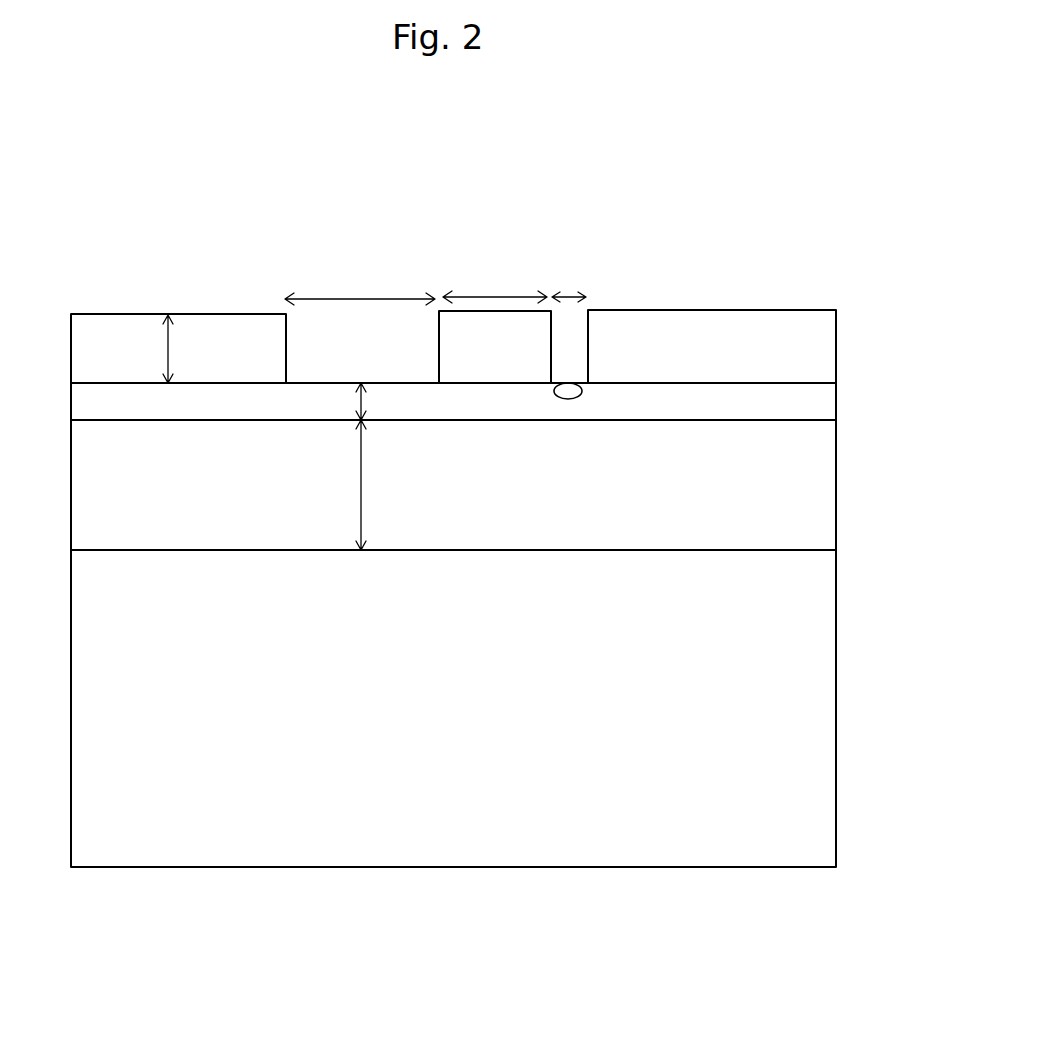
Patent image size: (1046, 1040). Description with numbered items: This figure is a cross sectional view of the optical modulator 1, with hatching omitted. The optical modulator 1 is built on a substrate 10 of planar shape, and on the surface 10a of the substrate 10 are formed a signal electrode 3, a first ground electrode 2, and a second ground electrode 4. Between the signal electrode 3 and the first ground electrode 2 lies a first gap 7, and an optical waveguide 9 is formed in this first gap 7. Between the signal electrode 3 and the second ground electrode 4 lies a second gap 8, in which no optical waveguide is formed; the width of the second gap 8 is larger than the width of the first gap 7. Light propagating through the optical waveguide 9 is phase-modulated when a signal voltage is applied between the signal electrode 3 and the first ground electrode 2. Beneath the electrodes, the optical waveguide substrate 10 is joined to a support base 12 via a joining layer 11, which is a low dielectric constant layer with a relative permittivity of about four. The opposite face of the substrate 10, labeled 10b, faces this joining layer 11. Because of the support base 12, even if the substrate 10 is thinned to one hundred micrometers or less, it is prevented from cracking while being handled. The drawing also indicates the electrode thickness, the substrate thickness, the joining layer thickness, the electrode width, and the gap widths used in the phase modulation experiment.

The optical modulator 1 is at (859, 324).
The first ground electrode 2 is at (766, 320).
The signal electrode 3 is at (513, 367).
The second ground electrode 4 is at (234, 318).
The first gap 7 is at (610, 298).
The second gap 8 is at (404, 293).
The optical waveguide 9 is at (572, 398).
The substrate 10 is at (827, 398).
The surface of the substrate 10a is at (813, 377).
The lower surface of substrate 10b is at (817, 420).
The joining layer 11 is at (822, 497).
The support base 12 is at (815, 667).